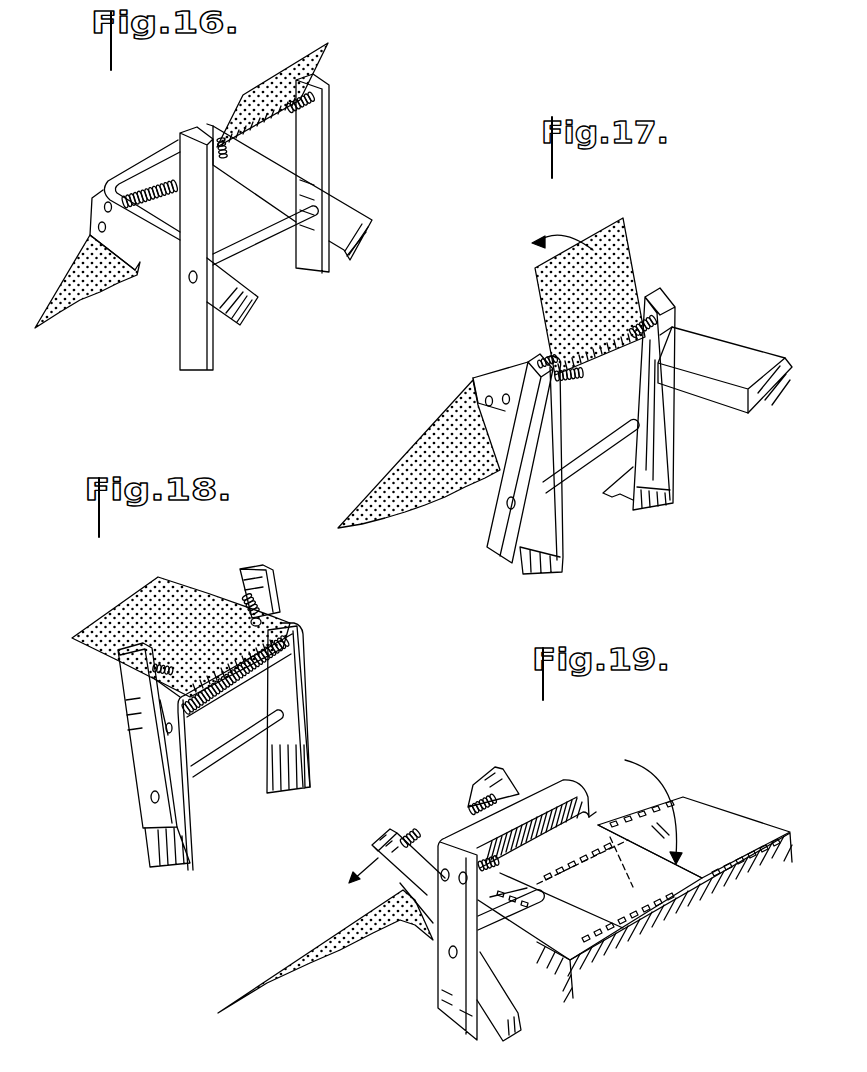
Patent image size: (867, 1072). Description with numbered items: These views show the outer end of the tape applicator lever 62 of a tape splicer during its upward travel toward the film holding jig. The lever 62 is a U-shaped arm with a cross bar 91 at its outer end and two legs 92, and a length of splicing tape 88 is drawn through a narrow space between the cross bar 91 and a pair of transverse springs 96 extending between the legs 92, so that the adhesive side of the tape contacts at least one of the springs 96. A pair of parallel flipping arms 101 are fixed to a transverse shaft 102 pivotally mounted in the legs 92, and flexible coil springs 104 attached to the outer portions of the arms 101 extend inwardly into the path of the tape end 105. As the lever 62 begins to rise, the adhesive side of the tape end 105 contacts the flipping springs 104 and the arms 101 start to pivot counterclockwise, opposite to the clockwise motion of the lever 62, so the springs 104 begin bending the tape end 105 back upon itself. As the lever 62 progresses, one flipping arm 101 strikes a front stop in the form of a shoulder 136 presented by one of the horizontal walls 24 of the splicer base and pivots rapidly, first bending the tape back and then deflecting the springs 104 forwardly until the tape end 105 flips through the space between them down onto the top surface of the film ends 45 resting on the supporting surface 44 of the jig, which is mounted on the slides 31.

In FIG. 17, the horizontal top wall 24 is at (792, 367).
In FIG. 17, the slide 31 is at (740, 352).
In FIG. 19, the supporting surface 44 is at (755, 830).
In FIG. 19, the film ends 45 is at (700, 820).
In FIG. 16, the tape applicator lever 62 is at (122, 234).
In FIG. 17, the tape applicator lever 62 is at (468, 394).
In FIG. 18, the tape applicator lever 62 is at (319, 691).
In FIG. 19, the tape applicator lever 62 is at (424, 945).
In FIG. 16, the tape 88 is at (60, 290).
In FIG. 17, the tape 88 is at (390, 480).
In FIG. 19, the tape 88 is at (265, 983).
In FIG. 16, the cross bar 91 is at (78, 180).
In FIG. 17, the cross bar 91 is at (430, 377).
In FIG. 18, the cross bar 91 is at (292, 622).
In FIG. 19, the cross bar 91 is at (530, 797).
In FIG. 16, the legs 92 is at (345, 202).
In FIG. 17, the legs 92 is at (550, 552).
In FIG. 18, the legs 92 is at (300, 748).
In FIG. 19, the legs 92 is at (440, 985).
In FIG. 16, the transverse springs 96 is at (135, 192).
In FIG. 17, the transverse springs 96 is at (550, 356).
In FIG. 18, the transverse springs 96 is at (170, 743).
In FIG. 19, the transverse springs 96 is at (491, 876).
In FIG. 16, the flipping arms 101 is at (312, 141).
In FIG. 17, the flipping arms 101 is at (622, 272).
In FIG. 18, the flipping arms 101 is at (258, 570).
In FIG. 19, the flipping arms 101 is at (389, 829).
In FIG. 16, the transverse shaft 102 is at (276, 232).
In FIG. 17, the transverse shaft 102 is at (583, 470).
In FIG. 18, the transverse shaft 102 is at (241, 752).
In FIG. 19, the transverse shaft 102 is at (503, 940).
In FIG. 16, the resilient flipping springs 104 is at (318, 114).
In FIG. 17, the resilient flipping springs 104 is at (578, 379).
In FIG. 18, the resilient flipping springs 104 is at (165, 664).
In FIG. 19, the resilient flipping springs 104 is at (413, 832).
In FIG. 16, the tape end 105 is at (272, 80).
In FIG. 17, the tape end 105 is at (602, 233).
In FIG. 18, the tape end 105 is at (125, 610).
In FIG. 19, the tape end 105 is at (612, 880).
In FIG. 17, the shoulder 136 is at (667, 357).